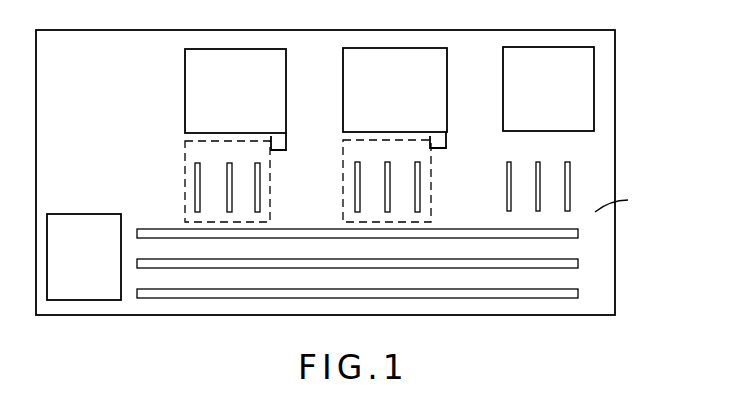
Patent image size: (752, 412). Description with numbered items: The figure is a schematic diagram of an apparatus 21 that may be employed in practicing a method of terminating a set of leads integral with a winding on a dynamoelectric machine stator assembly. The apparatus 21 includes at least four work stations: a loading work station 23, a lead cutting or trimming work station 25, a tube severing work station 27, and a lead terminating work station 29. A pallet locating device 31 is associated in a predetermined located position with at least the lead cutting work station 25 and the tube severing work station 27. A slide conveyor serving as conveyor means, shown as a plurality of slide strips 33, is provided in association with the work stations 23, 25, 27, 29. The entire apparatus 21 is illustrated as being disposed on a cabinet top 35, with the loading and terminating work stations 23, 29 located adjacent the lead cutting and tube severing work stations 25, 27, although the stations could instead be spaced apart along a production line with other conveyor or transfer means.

The apparatus 21 is at (668, 89).
The loading work station 23 is at (98, 263).
The lead cutting or trimming work station 25 is at (252, 96).
The tube severing work station 27 is at (403, 96).
The lead terminating work station 29 is at (557, 95).
The pallet locating device 31 is at (288, 147).
The slide strips 33 is at (180, 308).
The cabinet top 35 is at (628, 200).